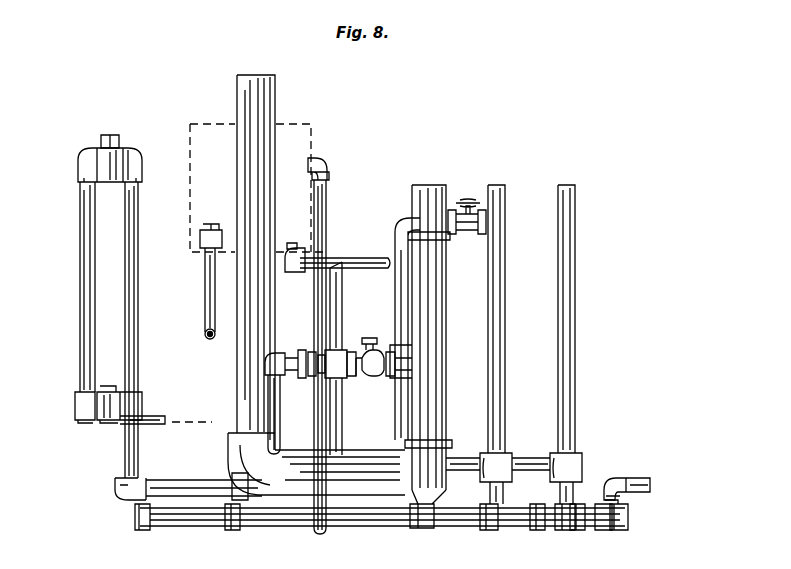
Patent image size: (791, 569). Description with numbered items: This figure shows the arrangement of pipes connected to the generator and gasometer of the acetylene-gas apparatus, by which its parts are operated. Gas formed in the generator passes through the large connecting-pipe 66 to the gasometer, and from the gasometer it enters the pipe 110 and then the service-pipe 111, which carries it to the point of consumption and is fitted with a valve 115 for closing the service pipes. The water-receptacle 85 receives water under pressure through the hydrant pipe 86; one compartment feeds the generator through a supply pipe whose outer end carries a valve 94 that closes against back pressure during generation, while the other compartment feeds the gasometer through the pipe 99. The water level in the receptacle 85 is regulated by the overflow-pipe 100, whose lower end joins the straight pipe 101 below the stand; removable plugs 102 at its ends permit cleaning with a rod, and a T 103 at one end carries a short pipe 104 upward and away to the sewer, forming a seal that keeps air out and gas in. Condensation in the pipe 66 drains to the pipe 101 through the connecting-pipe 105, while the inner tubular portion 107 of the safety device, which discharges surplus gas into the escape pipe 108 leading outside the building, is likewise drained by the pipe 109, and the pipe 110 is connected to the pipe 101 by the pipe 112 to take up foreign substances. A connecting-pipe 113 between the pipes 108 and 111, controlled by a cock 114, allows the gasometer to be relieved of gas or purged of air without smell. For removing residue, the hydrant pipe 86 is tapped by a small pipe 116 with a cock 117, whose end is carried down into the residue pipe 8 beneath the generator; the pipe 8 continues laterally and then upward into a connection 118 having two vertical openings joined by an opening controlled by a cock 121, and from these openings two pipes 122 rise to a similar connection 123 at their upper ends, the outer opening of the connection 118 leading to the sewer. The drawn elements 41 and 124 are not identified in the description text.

The pipe 8 is at (186, 484).
The drip pipe 41 is at (205, 322).
The connecting-pipe 66 is at (275, 305).
The water-receptacle 85 is at (259, 188).
The pipe 86 is at (327, 241).
The valve 94 is at (208, 228).
The pipe 99 is at (366, 274).
The overflow-pipe 100 is at (244, 491).
The pipe 101 is at (524, 527).
The removable plugs 102 is at (135, 511).
The T 103 is at (615, 530).
The short pipe 104 is at (640, 500).
The connecting-pipe 105 is at (440, 500).
The inner tubular portion 107 is at (502, 412).
The pipe 108 is at (342, 404).
The pipe 109 is at (497, 495).
The pipe 110 is at (568, 346).
The service-pipe 111 is at (425, 290).
The pipe 112 is at (560, 495).
The connecting-pipe 113 is at (384, 354).
The cock 114 is at (362, 377).
The valve 115 is at (466, 210).
The small pipe 116 is at (276, 358).
The cock 117 is at (306, 380).
The connection 118 is at (100, 410).
The cock 121 is at (118, 140).
The pipes 122 is at (133, 291).
The connection 123 is at (142, 168).
The plate 124 is at (104, 387).